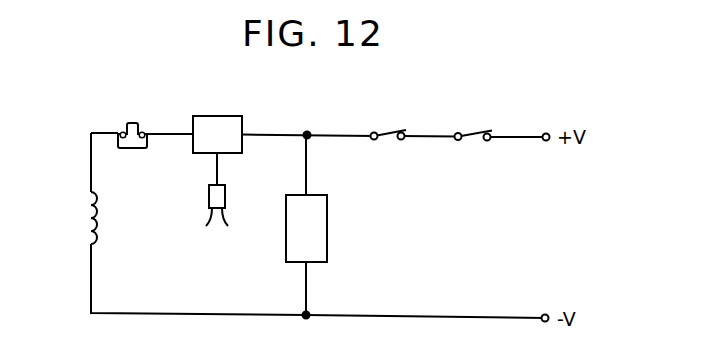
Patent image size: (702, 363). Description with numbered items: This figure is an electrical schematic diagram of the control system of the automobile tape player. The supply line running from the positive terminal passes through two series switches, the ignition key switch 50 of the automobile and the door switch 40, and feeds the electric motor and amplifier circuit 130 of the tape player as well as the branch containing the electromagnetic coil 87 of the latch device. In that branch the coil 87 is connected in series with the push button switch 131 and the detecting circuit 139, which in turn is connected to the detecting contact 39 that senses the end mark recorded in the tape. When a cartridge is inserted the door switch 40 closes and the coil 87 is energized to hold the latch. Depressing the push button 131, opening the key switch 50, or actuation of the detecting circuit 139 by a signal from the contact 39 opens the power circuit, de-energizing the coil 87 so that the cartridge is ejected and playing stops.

The electromagnetic coil 87 is at (87, 213).
The push button switch 131 is at (133, 148).
The detecting circuit 139 is at (233, 100).
The detecting contact 39 is at (226, 201).
The electric motor and amplifier circuit 130 is at (327, 240).
The door switch 40 is at (391, 140).
The ignition key switch 50 is at (474, 141).